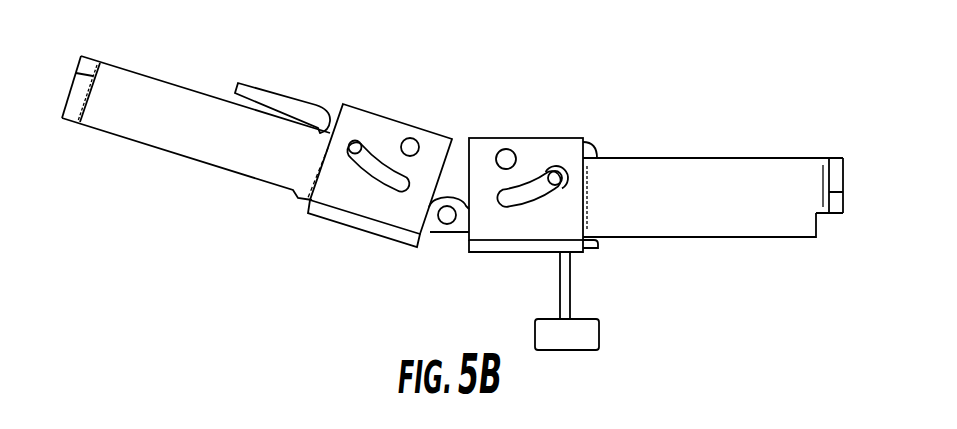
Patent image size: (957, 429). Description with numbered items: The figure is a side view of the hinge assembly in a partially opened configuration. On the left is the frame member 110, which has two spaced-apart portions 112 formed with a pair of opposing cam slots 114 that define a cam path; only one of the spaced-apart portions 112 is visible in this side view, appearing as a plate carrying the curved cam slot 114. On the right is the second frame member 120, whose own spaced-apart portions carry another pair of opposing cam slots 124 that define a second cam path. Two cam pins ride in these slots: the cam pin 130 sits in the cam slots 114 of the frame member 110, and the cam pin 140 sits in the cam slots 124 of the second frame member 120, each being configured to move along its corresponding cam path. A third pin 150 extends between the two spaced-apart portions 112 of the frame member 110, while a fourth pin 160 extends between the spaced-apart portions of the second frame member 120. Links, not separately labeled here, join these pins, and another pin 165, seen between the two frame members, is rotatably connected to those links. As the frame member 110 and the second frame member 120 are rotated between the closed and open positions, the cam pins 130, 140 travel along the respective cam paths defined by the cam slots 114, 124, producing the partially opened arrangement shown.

The frame member 110 is at (316, 232).
The spaced-apart portions 112 is at (365, 204).
The cam slots 114 is at (357, 164).
The second frame member 120 is at (609, 281).
The cam slots 124 is at (528, 201).
The cam pin 130 is at (354, 140).
The cam pin 140 is at (560, 172).
The third pin 150 is at (409, 138).
The fourth pin 160 is at (509, 150).
The pin 165 is at (447, 224).